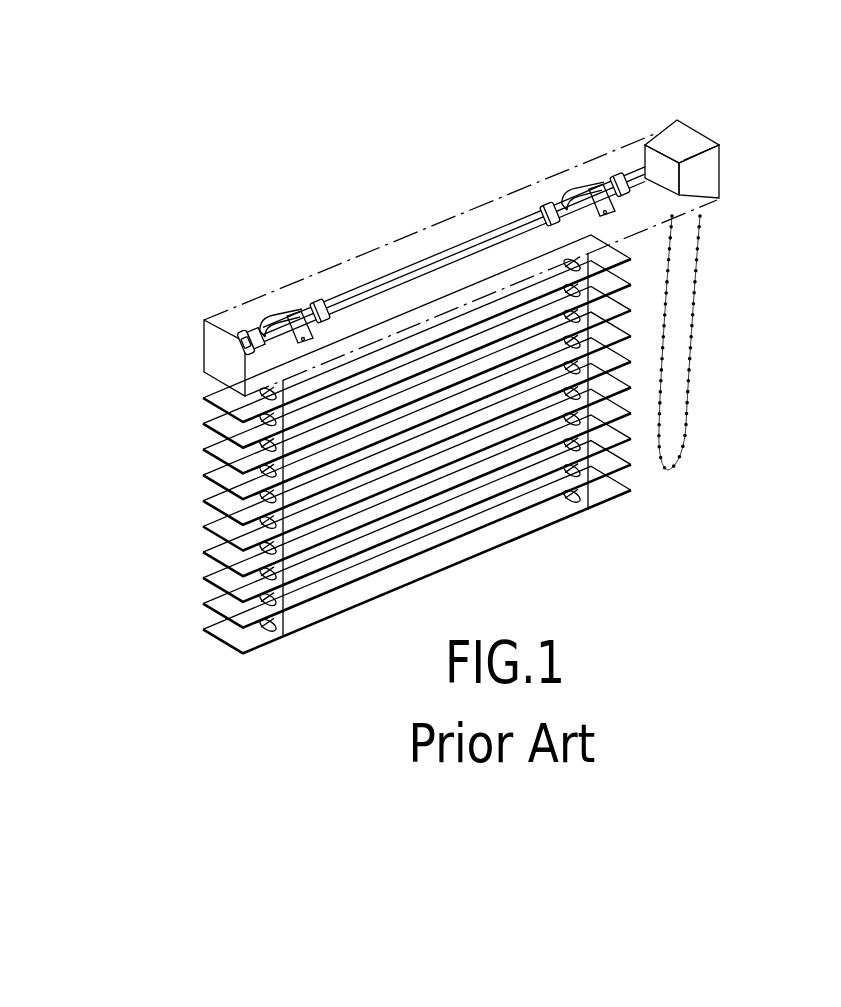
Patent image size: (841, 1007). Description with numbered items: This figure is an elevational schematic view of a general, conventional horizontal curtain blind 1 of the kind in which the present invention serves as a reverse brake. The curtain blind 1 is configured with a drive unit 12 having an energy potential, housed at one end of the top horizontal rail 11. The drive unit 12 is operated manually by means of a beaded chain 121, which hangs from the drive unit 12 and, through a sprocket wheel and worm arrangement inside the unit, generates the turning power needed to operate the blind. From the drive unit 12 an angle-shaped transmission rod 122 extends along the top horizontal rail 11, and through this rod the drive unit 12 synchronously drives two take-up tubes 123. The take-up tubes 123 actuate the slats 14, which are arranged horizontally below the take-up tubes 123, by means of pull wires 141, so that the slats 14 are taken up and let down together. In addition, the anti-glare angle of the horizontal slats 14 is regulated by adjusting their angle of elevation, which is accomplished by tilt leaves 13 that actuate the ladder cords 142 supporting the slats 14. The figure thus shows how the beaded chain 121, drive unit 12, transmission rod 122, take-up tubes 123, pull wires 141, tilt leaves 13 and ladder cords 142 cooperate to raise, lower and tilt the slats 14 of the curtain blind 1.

The curtain blind 1 is at (332, 179).
The top horizontal rail 11 is at (598, 165).
The drive unit 12 is at (695, 170).
The beaded chain 121 is at (693, 345).
The angle-shaped transmission rod 122 is at (440, 255).
The take-up tubes 123 is at (561, 198).
The tilt leaves 13 is at (274, 315).
The slats 14 is at (222, 423).
The pull wires 141 is at (262, 449).
The ladder cords 142 is at (284, 546).